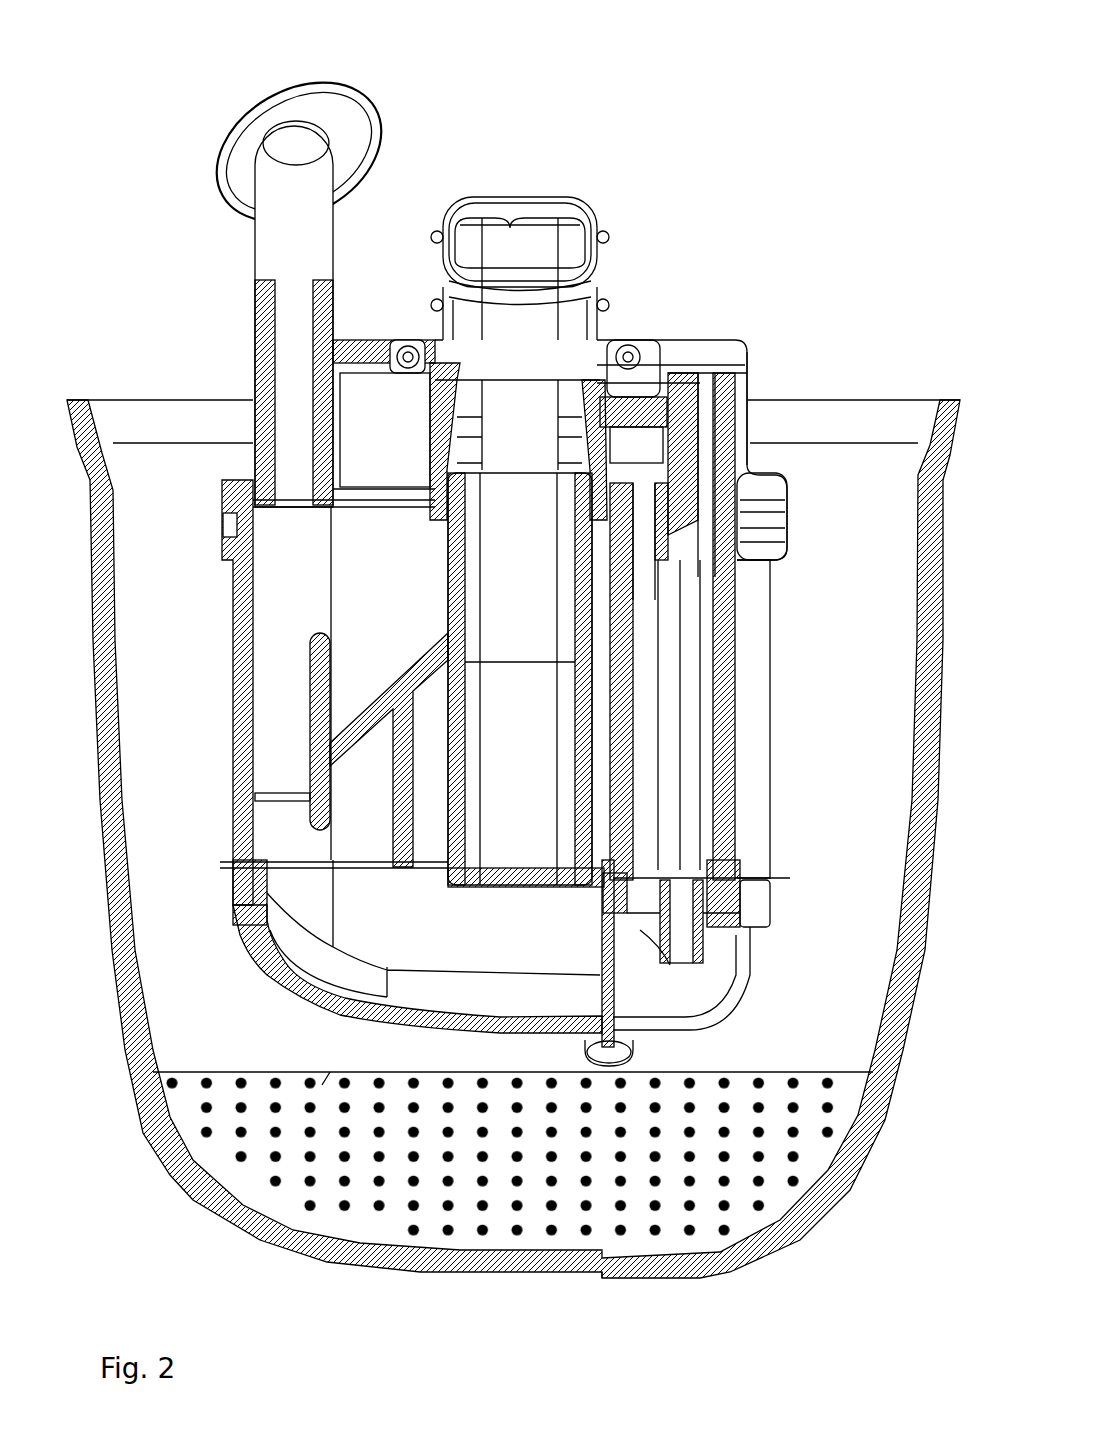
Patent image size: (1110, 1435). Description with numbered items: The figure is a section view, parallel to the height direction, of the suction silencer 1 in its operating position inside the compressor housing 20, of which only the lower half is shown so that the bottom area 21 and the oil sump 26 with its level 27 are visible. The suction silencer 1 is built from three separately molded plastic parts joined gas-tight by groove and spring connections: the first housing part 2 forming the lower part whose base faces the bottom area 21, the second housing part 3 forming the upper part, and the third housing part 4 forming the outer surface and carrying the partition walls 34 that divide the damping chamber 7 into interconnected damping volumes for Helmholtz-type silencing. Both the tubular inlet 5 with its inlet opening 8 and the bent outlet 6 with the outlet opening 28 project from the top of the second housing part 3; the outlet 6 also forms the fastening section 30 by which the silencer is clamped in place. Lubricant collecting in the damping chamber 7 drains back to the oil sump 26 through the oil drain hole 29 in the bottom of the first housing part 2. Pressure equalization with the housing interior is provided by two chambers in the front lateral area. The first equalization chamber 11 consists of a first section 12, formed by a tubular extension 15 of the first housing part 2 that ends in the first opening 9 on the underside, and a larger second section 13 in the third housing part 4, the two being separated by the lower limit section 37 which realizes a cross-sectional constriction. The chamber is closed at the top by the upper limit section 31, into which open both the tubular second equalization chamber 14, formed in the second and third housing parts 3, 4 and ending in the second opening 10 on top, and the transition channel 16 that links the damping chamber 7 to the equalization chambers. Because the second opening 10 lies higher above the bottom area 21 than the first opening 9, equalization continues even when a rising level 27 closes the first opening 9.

The suction silencer 1 is at (636, 120).
The first housing part 2 is at (230, 905).
The second housing part 3 is at (153, 85).
The third housing part 4 is at (213, 497).
The inlet 5 is at (290, 273).
The outlet 6 is at (525, 197).
The damping chamber 7 is at (350, 570).
The inlet opening 8 is at (288, 146).
The first opening 9 is at (650, 945).
The second opening 10 is at (708, 360).
The first equalization chamber 11 is at (694, 740).
The first section 12 is at (782, 878).
The second section 13 is at (670, 718).
The second equalization chamber 14 is at (712, 478).
The tubular extension 15 is at (683, 976).
The transition channel 16 is at (640, 535).
The compressor housing 20 is at (145, 1133).
The bottom area 21 is at (909, 1045).
The oil sump 26 is at (466, 1160).
The level 27 is at (330, 1072).
The outlet opening 28 is at (505, 240).
The oil drain hole 29 is at (607, 1062).
The fastening section 30 is at (420, 212).
The upper limit section 31 is at (738, 545).
The partition walls 34 is at (398, 680).
The lower limit section 37 is at (757, 878).